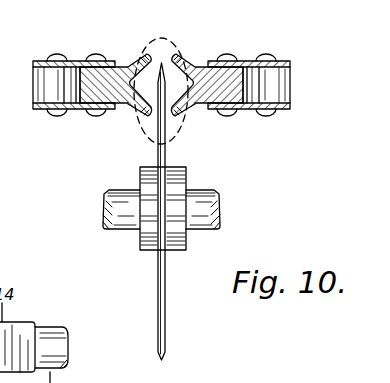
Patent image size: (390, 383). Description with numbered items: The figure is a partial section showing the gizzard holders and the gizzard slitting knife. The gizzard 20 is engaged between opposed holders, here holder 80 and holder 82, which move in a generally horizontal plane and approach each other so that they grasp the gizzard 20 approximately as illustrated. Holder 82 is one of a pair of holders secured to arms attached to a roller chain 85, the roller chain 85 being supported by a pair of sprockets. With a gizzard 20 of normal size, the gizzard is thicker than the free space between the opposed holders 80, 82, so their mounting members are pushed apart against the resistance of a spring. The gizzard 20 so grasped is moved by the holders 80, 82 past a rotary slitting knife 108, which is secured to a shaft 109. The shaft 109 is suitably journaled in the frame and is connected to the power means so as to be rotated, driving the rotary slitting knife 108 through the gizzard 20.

The gizzard 20 is at (165, 39).
The holder 80 is at (184, 56).
The holder 82 is at (139, 57).
The roller chain 85 is at (38, 62).
The rotary slitting knife 108 is at (166, 319).
The shaft 109 is at (217, 190).